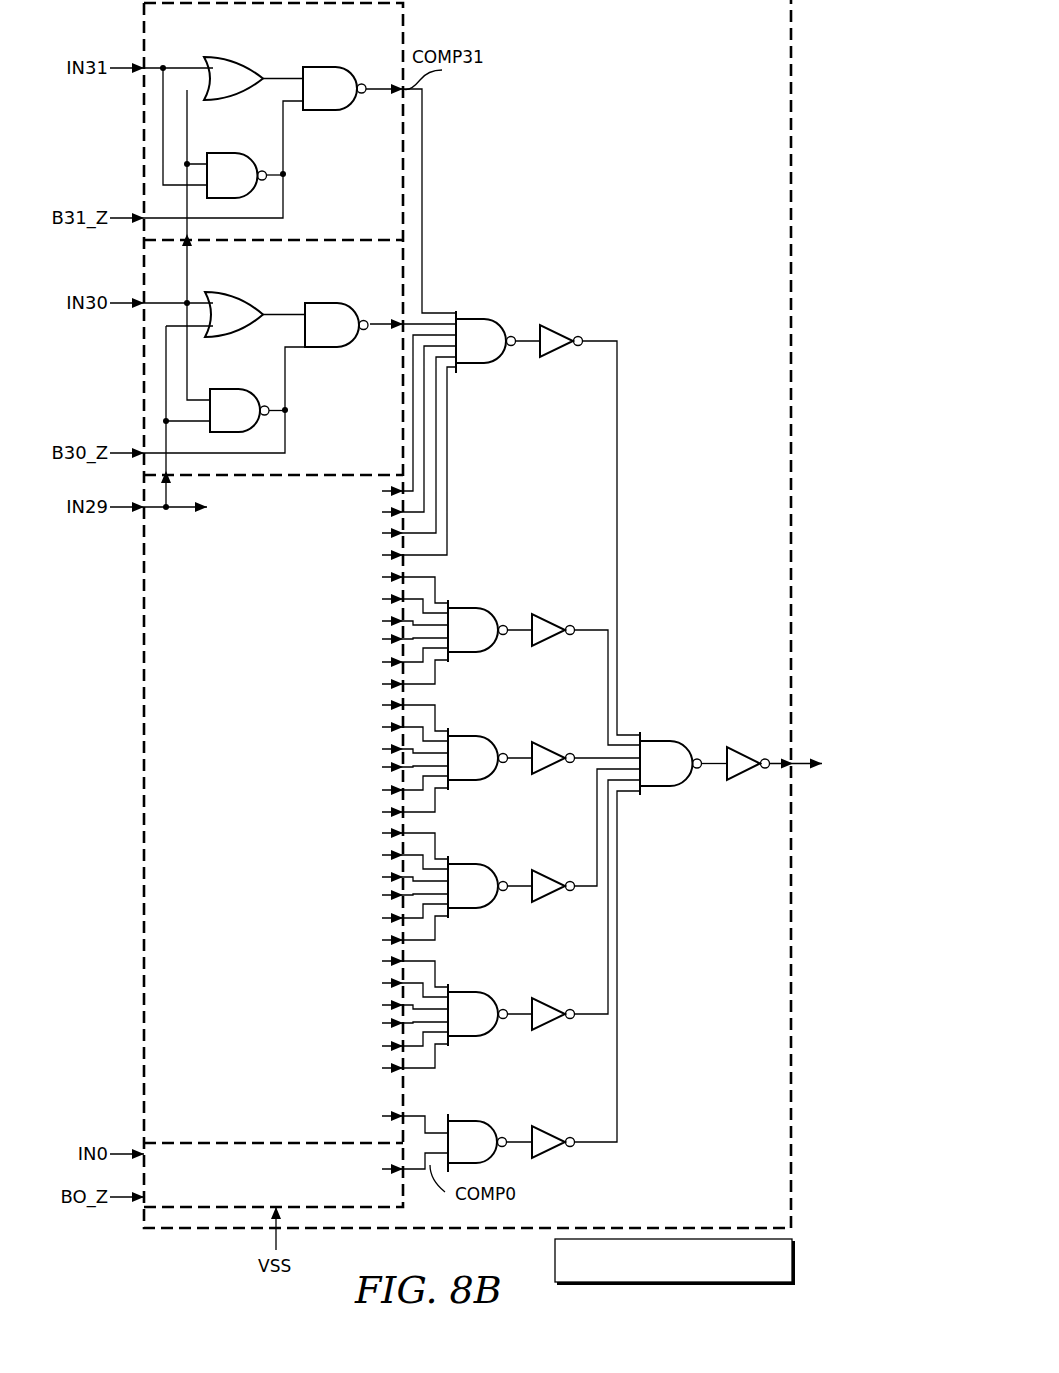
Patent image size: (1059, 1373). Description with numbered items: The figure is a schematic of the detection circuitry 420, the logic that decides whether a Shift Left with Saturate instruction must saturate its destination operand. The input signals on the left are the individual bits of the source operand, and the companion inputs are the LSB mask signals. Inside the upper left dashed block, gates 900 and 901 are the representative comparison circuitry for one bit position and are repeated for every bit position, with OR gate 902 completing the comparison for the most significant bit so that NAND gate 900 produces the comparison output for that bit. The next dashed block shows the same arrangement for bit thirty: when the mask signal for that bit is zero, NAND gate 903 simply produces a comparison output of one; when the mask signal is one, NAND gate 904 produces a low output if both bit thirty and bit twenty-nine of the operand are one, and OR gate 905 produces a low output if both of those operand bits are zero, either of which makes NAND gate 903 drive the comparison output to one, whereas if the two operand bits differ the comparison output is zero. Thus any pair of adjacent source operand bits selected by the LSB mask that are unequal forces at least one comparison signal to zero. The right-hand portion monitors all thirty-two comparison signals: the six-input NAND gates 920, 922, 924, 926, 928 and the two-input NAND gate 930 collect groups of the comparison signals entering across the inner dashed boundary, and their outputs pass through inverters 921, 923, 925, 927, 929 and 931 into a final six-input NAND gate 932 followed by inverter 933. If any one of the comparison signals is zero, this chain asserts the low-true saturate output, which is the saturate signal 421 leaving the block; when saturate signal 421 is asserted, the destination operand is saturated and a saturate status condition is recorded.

The detection circuitry 420 is at (790, 388).
The saturate signal 421 is at (803, 758).
The NAND gate 900 is at (323, 66).
The NAND gate 901 is at (238, 152).
The OR gate 902 is at (267, 46).
The NAND gate 903 is at (326, 302).
The NAND gate 904 is at (236, 388).
The OR gate 905 is at (269, 282).
The NAND gate 920 is at (486, 322).
The inverter 921 is at (578, 509).
The NAND gate 922 is at (445, 625).
The inverter 923 is at (574, 659).
The NAND gate 924 is at (445, 753).
The inverter 925 is at (574, 738).
The NAND gate 926 is at (445, 881).
The inverter 927 is at (574, 835).
The NAND gate 928 is at (445, 1009).
The inverter 929 is at (574, 905).
The NAND gate 930 is at (477, 1122).
The inverter 931 is at (574, 974).
The NAND gate 932 is at (657, 740).
The inverter 933 is at (740, 746).